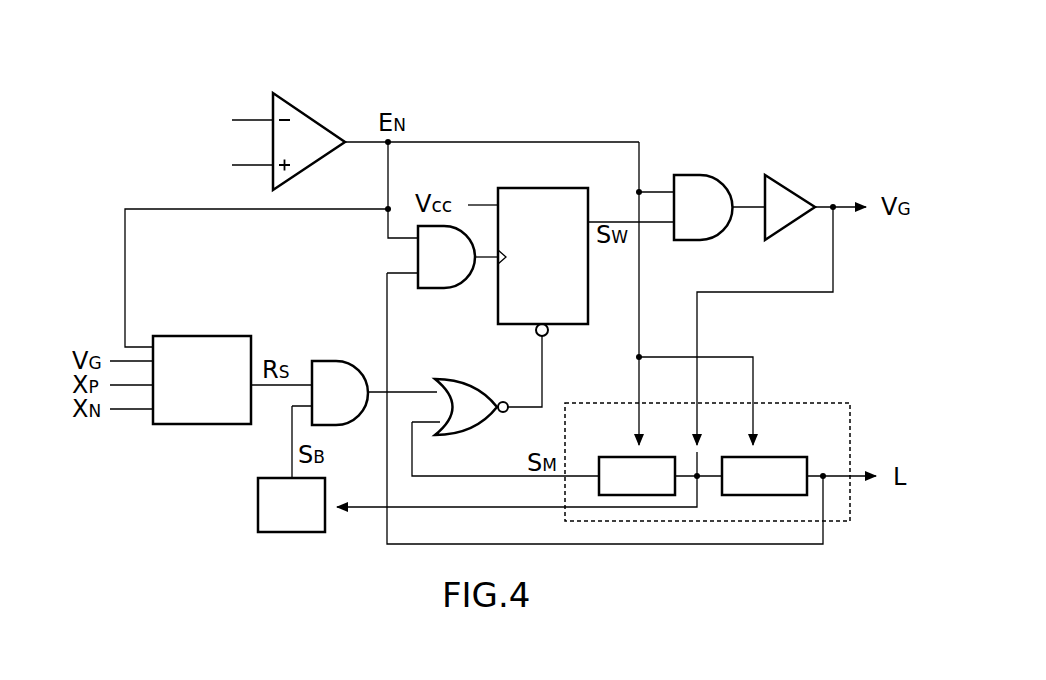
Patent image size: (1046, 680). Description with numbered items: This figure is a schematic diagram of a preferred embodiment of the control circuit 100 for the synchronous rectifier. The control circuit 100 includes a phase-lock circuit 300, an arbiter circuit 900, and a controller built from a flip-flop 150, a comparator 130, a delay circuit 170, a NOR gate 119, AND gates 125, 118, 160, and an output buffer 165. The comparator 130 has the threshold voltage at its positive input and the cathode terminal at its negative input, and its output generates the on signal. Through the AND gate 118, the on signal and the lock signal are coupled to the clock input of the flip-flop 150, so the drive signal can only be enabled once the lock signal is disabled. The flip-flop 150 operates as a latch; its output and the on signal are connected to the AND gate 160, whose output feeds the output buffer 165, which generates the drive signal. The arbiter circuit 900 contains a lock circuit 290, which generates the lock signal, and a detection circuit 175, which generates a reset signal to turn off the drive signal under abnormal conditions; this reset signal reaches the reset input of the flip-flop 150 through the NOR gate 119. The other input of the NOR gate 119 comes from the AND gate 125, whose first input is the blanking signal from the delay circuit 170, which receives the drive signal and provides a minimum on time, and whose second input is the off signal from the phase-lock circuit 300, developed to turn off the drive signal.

The control circuit 100 is at (899, 54).
The AND gate 118 is at (450, 289).
The NOR gate 119 is at (462, 380).
The AND gate 125 is at (330, 361).
The comparator 130 is at (305, 102).
The flip-flop 150 is at (543, 246).
The AND gate 160 is at (686, 175).
The output buffer 165 is at (790, 177).
The delay circuit 170 is at (300, 533).
The detection circuit 175 is at (598, 456).
The lock circuit 290 is at (765, 456).
The phase-lock circuit 300 is at (213, 424).
The arbiter circuit 900 is at (805, 402).